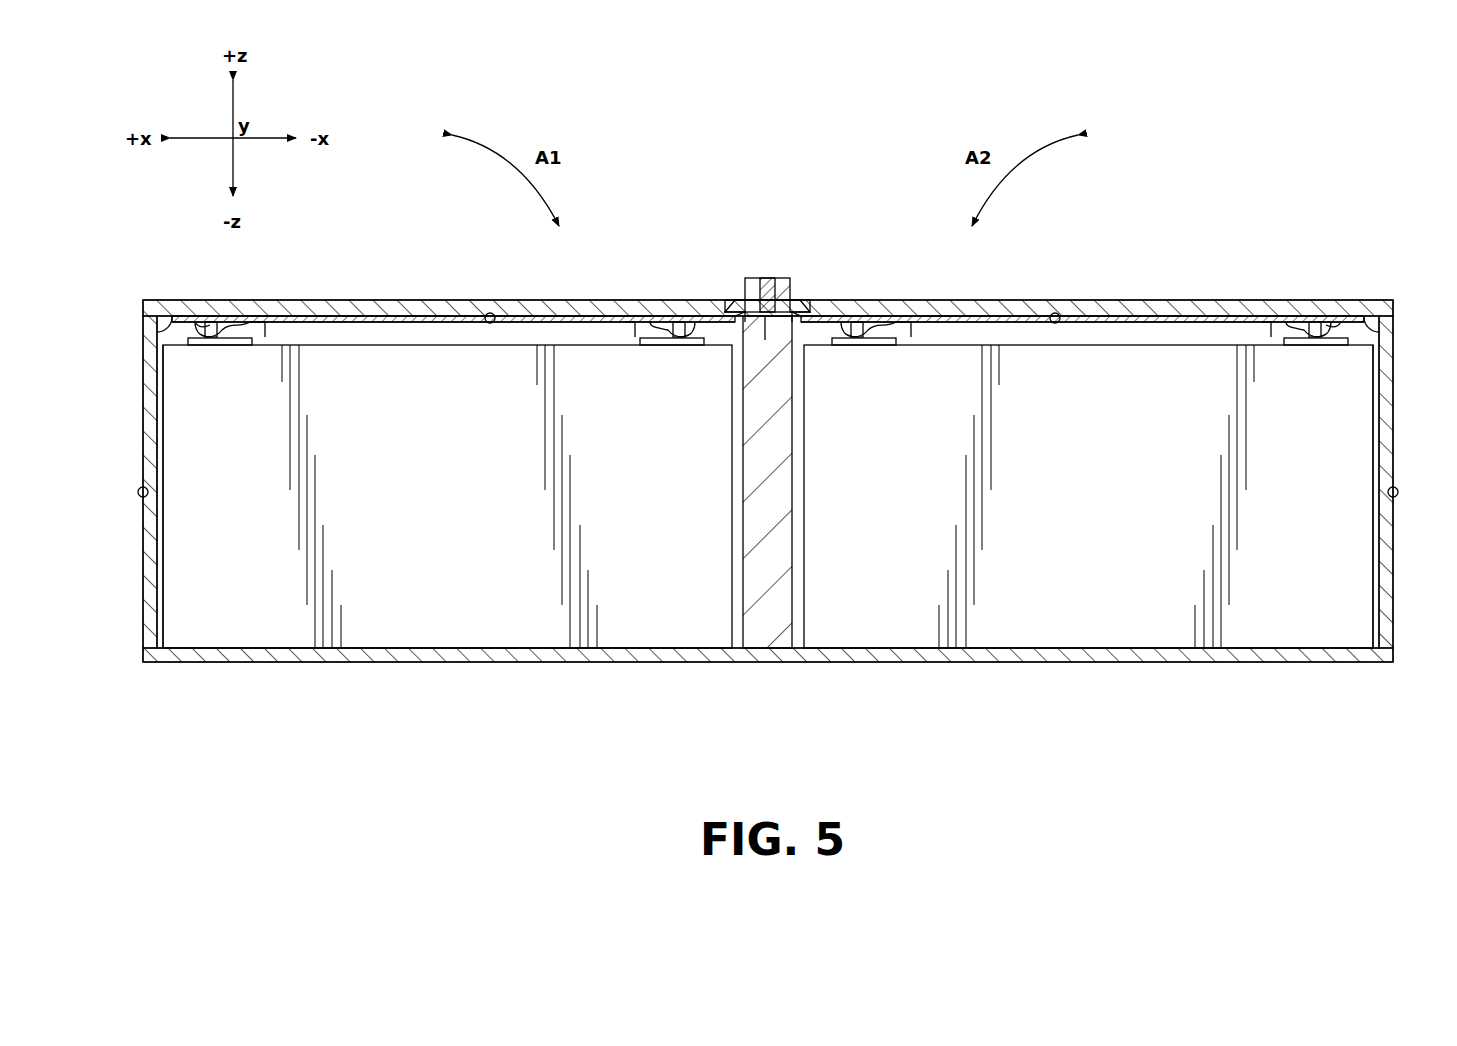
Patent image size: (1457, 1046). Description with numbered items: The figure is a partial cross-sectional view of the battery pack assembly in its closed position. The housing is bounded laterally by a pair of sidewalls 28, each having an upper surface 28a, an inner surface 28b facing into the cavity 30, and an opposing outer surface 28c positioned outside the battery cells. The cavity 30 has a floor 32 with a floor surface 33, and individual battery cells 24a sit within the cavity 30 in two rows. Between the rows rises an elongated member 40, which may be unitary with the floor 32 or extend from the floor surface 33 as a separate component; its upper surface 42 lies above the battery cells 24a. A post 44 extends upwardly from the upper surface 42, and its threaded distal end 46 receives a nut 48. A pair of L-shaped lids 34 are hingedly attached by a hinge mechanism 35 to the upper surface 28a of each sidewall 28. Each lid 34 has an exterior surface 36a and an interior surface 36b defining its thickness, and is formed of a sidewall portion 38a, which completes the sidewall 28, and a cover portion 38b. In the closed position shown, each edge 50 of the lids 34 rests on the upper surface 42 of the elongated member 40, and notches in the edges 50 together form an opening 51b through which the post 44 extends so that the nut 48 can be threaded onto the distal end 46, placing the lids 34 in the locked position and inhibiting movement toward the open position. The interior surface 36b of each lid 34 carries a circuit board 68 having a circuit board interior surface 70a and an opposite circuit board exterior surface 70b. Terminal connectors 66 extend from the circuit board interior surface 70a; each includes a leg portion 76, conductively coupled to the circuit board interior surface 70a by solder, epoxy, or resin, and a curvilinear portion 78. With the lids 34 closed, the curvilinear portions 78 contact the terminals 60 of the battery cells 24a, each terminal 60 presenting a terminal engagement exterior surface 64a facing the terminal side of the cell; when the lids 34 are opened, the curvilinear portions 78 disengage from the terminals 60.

The battery cell 24a is at (500, 615).
The sidewall 28 is at (130, 612).
The upper surface 28a is at (163, 480).
The inner surface 28b is at (157, 588).
The outer surface 28c is at (150, 572).
The cavity 30 is at (1115, 328).
The floor 32 is at (1175, 662).
The floor surface 33 is at (1170, 645).
The lid 34 is at (575, 280).
The hinge mechanism 35 is at (138, 490).
The exterior surface 36a is at (440, 300).
The interior surface 36b is at (160, 346).
The sidewall portion 38a is at (142, 420).
The cover portion 38b is at (330, 298).
The elongated member 40 is at (765, 300).
The upper surface 42 is at (795, 300).
The post 44 is at (770, 285).
The distal end 46 is at (767, 290).
The nut 48 is at (775, 285).
The edge 50 is at (760, 296).
The opening 51b is at (770, 322).
The terminal 60 is at (240, 350).
The terminal engagement exterior surface 64a is at (740, 298).
The terminal connector 66 is at (225, 345).
The circuit board 68 is at (490, 313).
The circuit board interior surface 70a is at (400, 324).
The circuit board exterior surface 70b is at (390, 322).
The leg portion 76 is at (238, 330).
The curvilinear portion 78 is at (205, 345).